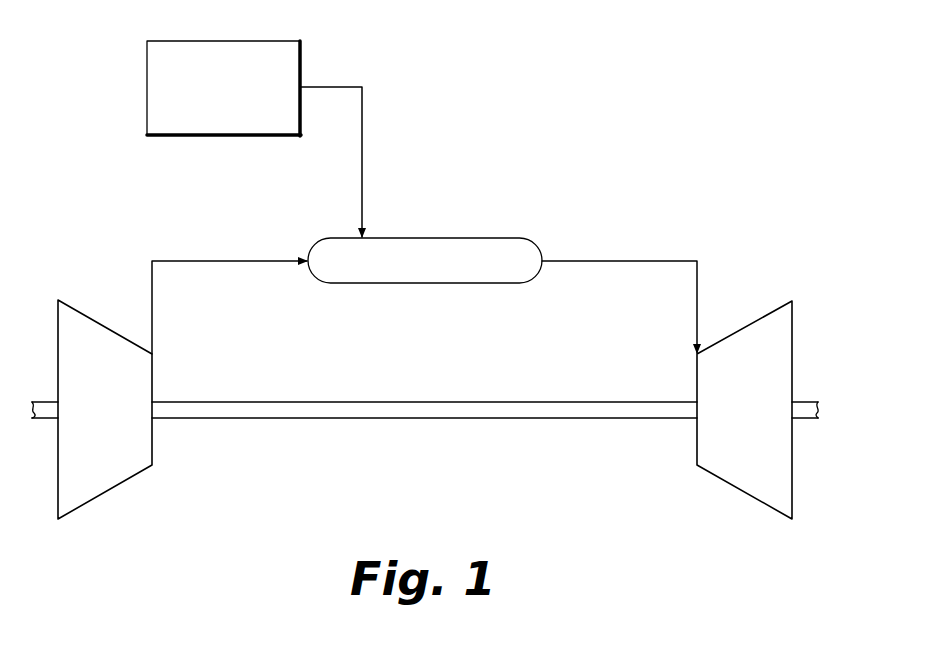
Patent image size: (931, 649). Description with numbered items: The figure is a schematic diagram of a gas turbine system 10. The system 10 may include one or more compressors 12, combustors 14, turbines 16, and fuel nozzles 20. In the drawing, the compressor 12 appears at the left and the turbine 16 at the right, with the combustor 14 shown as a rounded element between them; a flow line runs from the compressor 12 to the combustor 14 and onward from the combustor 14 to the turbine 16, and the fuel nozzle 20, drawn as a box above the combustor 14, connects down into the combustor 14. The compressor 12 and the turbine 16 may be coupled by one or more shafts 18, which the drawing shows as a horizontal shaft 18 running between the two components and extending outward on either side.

The gas turbine system 10 is at (680, 175).
The compressor 12 is at (105, 492).
The combustor 14 is at (425, 238).
The turbine 16 is at (793, 320).
The shaft 18 is at (425, 418).
The fuel nozzle 20 is at (300, 41).